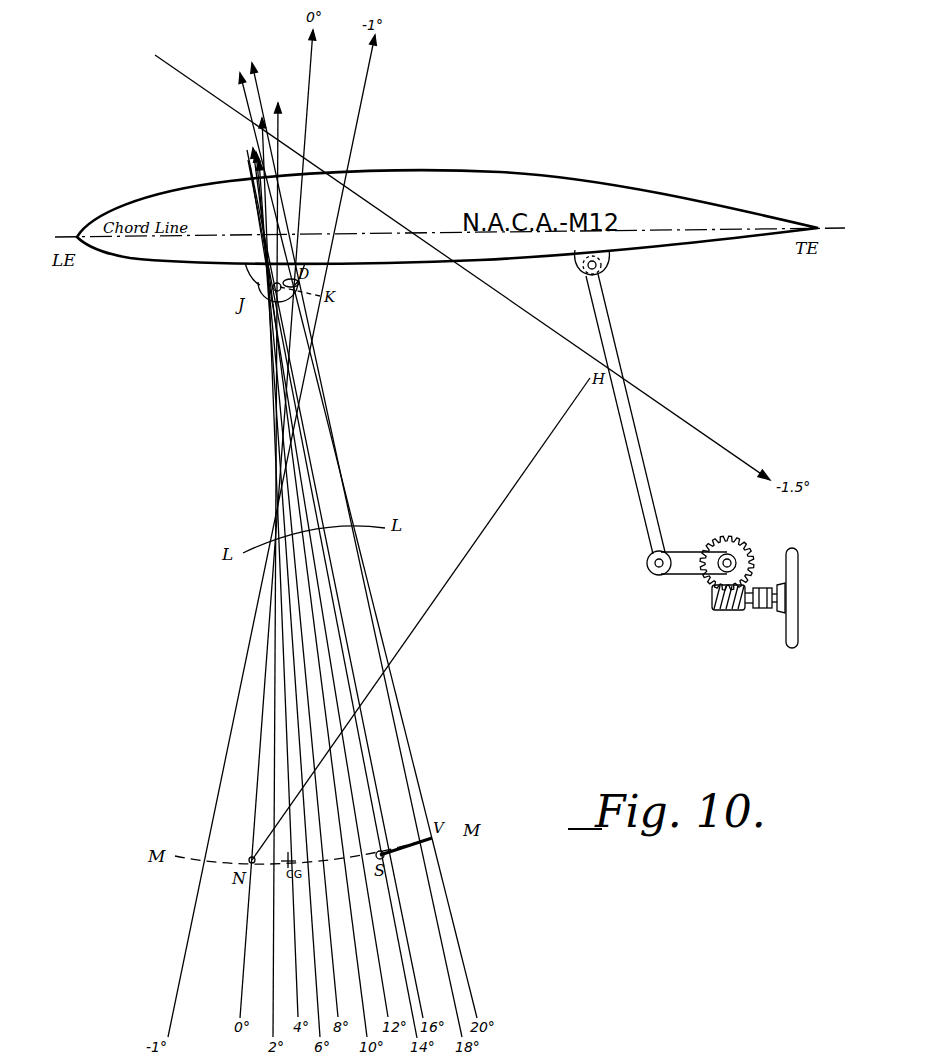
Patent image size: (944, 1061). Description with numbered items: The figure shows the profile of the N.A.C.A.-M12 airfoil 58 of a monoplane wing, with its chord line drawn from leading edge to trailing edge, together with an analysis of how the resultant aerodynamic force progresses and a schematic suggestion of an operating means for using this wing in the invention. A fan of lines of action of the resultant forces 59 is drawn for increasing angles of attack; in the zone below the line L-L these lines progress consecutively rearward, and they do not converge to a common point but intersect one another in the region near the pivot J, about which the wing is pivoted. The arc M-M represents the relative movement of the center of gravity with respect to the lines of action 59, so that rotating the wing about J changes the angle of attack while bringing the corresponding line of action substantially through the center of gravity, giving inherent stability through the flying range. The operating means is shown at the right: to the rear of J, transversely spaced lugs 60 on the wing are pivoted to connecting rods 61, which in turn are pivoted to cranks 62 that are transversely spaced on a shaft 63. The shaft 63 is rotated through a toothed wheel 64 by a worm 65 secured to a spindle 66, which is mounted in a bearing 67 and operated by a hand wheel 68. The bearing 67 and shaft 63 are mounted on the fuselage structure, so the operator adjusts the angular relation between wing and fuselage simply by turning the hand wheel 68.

The airfoil 58 is at (372, 240).
The lines of action of the resultant forces 59 is at (257, 92).
The lugs 60 is at (606, 263).
The connecting rods 61 is at (646, 538).
The cranks 62 is at (702, 536).
The shaft 63 is at (722, 566).
The worm gear 64 is at (746, 552).
The worm 65 is at (726, 612).
The spindle 66 is at (758, 610).
The bearing 67 is at (780, 613).
The hand wheel 68 is at (800, 637).